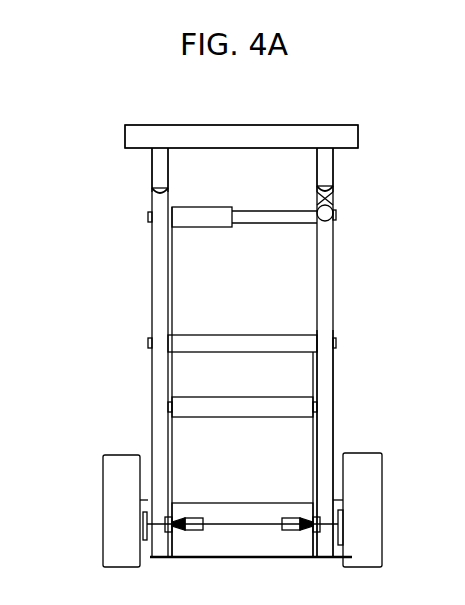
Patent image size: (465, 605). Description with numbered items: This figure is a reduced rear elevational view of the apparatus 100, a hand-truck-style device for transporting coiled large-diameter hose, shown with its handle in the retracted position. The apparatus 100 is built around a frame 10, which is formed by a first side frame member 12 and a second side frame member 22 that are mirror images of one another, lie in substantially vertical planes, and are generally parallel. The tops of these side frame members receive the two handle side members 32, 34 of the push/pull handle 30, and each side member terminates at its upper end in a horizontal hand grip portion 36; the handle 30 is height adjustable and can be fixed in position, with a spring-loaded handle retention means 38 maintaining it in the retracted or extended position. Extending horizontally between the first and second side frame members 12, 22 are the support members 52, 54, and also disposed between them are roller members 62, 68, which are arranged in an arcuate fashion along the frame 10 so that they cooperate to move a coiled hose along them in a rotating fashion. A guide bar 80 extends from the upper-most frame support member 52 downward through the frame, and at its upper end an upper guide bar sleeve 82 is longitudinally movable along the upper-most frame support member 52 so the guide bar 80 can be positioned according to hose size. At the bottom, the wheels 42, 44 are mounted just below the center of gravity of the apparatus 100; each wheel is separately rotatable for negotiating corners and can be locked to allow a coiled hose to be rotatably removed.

The apparatus 100 is at (66, 294).
The frame 10 is at (328, 298).
The first side frame member 12 is at (326, 372).
The second side frame member 22 is at (152, 318).
The push/pull handle 30 is at (140, 125).
The handle side member 32 is at (332, 165).
The handle side member 34 is at (151, 172).
The horizontal hand grip portion 36 is at (263, 135).
The spring-loaded handle retention means 38 is at (326, 222).
The wheel 42 is at (372, 485).
The wheel 44 is at (112, 477).
The upper-most frame support member 52 is at (271, 212).
The support member 54 is at (193, 338).
The roller member 62 is at (200, 410).
The roller member 68 is at (243, 508).
The guide bar 80 is at (172, 262).
The upper guide bar sleeve 82 is at (207, 213).